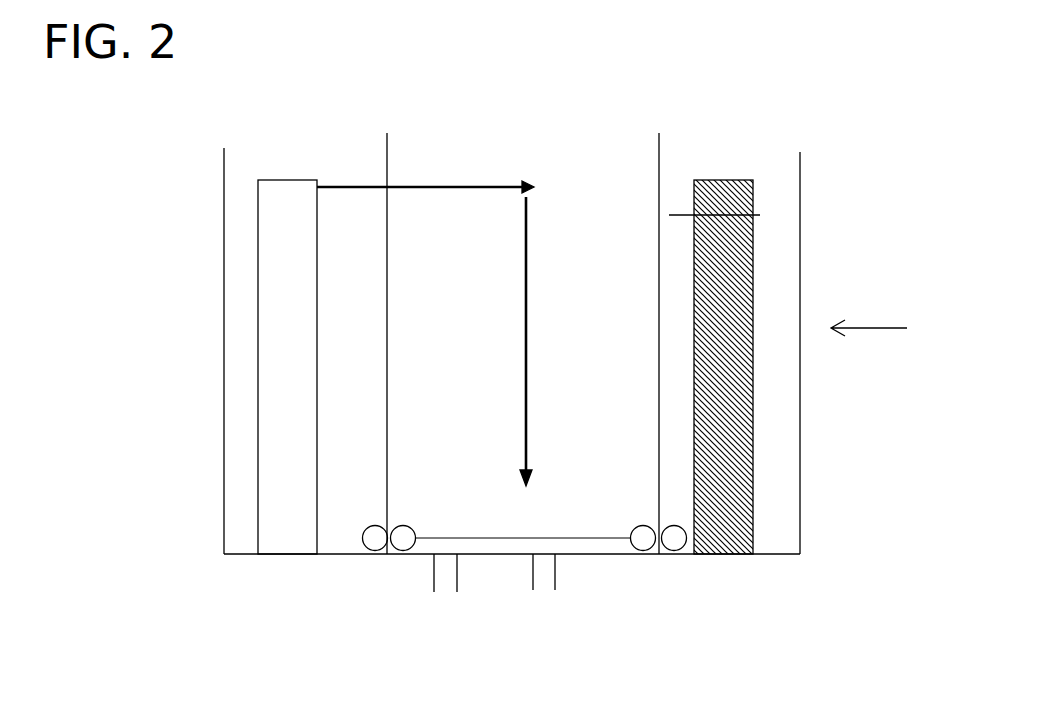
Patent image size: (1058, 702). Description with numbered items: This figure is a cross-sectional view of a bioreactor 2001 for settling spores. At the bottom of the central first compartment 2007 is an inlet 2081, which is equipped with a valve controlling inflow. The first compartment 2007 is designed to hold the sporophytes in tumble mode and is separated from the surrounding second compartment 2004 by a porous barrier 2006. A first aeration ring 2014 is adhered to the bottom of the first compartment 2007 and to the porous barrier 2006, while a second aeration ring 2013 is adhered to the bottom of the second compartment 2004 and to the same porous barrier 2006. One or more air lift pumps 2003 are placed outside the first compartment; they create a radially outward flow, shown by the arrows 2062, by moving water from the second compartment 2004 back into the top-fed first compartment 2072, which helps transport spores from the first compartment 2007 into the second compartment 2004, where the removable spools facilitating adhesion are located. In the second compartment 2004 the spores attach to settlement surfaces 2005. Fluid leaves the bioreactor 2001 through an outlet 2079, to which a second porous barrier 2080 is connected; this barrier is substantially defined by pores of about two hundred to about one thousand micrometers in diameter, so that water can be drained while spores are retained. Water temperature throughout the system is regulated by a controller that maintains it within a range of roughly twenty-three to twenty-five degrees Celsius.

The bioreactor 2001 is at (897, 330).
The air lift pump 2003 is at (288, 180).
The second compartment 2004 is at (243, 427).
The settlement surface 2005 is at (723, 180).
The porous barrier 2006 is at (760, 215).
The first compartment 2007 is at (410, 322).
The second aeration ring 2013 is at (367, 550).
The first aeration ring 2014 is at (406, 551).
The arrows 2062 is at (495, 185).
The first compartment (top fed) 2072 is at (511, 298).
The outlet 2079 is at (567, 575).
The second porous barrier 2080 is at (544, 554).
The inlet 2081 is at (442, 554).